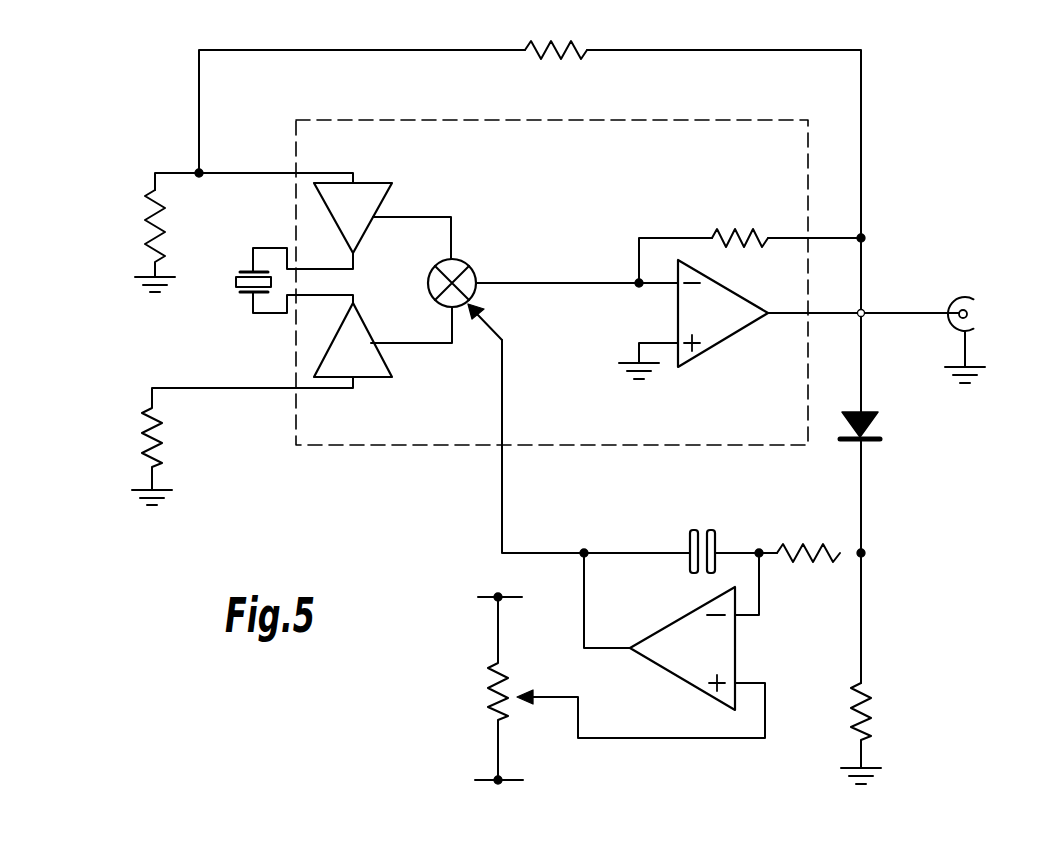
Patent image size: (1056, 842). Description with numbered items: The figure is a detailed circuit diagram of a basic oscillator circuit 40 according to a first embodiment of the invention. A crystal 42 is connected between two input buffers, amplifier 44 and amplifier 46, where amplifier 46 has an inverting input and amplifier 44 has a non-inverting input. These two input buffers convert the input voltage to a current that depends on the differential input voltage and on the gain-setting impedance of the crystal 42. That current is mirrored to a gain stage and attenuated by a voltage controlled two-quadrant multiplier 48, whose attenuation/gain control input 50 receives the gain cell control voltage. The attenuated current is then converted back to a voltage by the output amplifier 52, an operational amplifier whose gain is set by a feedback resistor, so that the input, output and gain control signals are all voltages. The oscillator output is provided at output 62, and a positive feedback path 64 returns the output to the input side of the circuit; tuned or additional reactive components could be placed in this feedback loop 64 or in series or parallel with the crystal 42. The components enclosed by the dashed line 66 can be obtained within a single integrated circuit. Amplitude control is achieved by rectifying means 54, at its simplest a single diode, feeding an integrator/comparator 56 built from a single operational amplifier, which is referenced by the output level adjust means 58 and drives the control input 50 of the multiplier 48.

The oscillator circuit 40 is at (122, 350).
The crystal 42 is at (235, 281).
The amplifier 44 is at (365, 361).
The amplifier 46 is at (365, 218).
The multiplier 48 is at (462, 258).
The attenuation/gain control input 50 is at (503, 340).
The amplifier 52 is at (720, 325).
The rectifying means 54 is at (872, 420).
The integrator/comparator 56 is at (704, 512).
The output level adjust means 58 is at (510, 665).
The output 62 is at (965, 297).
The positive feedback path 64 is at (715, 50).
The dashed line 66 is at (786, 120).